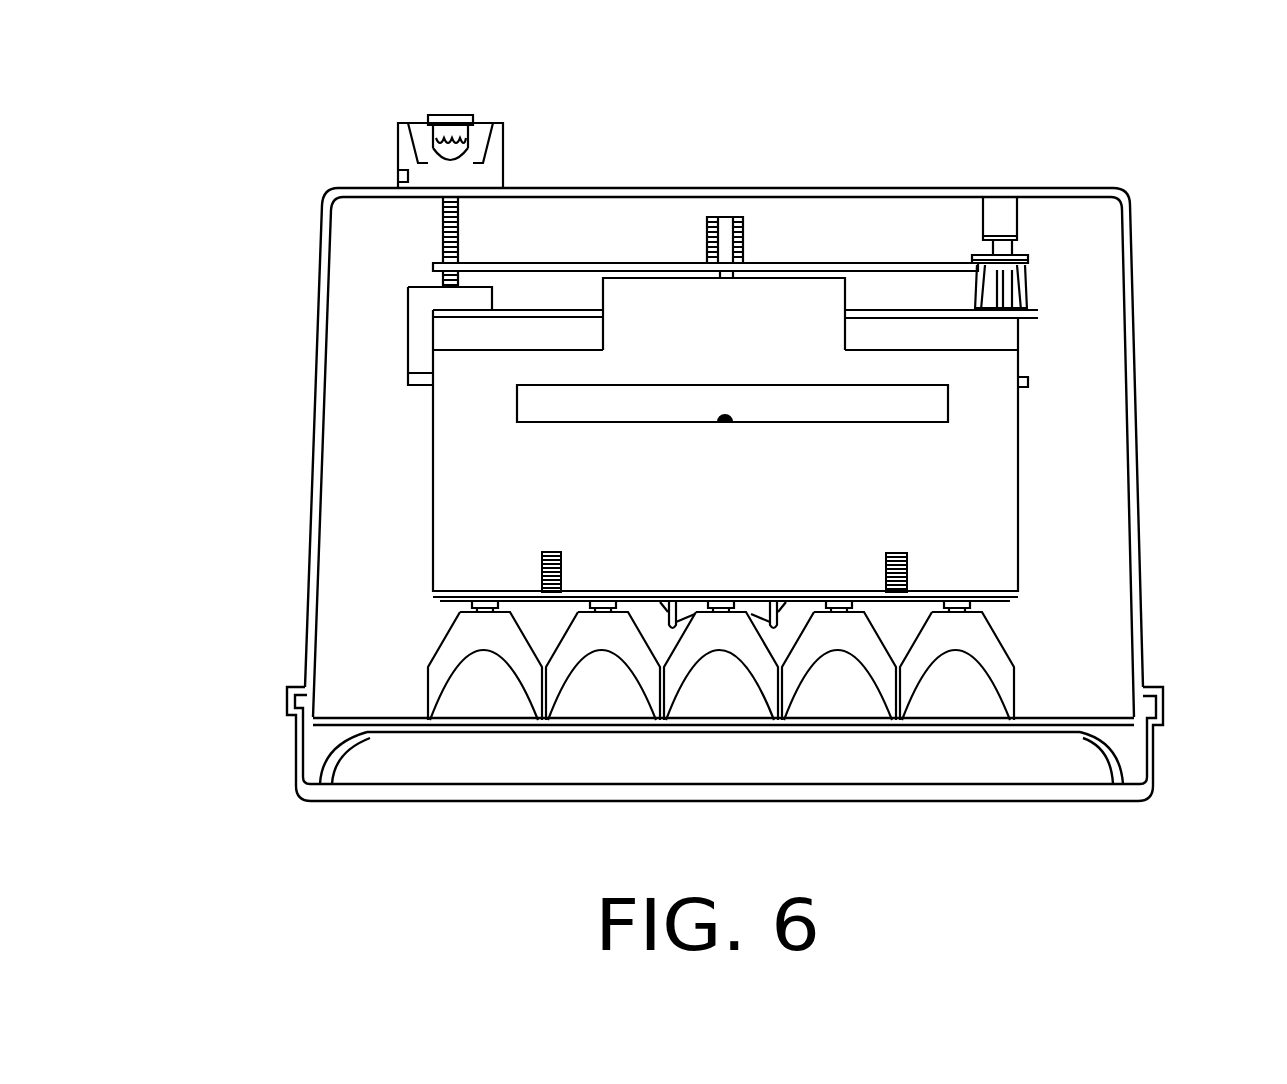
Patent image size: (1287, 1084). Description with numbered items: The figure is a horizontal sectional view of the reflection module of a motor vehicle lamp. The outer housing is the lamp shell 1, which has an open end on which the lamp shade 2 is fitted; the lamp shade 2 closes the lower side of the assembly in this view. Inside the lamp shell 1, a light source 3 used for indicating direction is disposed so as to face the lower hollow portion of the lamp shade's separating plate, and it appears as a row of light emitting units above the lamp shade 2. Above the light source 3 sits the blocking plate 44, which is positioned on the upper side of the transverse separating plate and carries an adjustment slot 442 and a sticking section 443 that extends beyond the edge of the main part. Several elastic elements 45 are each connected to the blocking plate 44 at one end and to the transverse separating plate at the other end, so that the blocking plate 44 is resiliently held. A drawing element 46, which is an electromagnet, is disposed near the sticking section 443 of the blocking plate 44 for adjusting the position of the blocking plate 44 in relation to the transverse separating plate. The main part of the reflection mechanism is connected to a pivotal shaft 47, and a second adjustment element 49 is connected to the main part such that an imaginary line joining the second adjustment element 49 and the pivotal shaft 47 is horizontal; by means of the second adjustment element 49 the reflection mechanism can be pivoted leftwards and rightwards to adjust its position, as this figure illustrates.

The lamp shell 1 is at (316, 432).
The lamp shade 2 is at (458, 796).
The light source 3 is at (1007, 672).
The blocking plate 44 is at (1003, 598).
The elastic elements 45 is at (907, 567).
The drawing element 46 is at (740, 222).
The pivotal shaft 47 is at (1025, 282).
The second adjustment element 49 is at (433, 178).
The adjustment slot 442 is at (898, 402).
The sticking section 443 is at (828, 329).